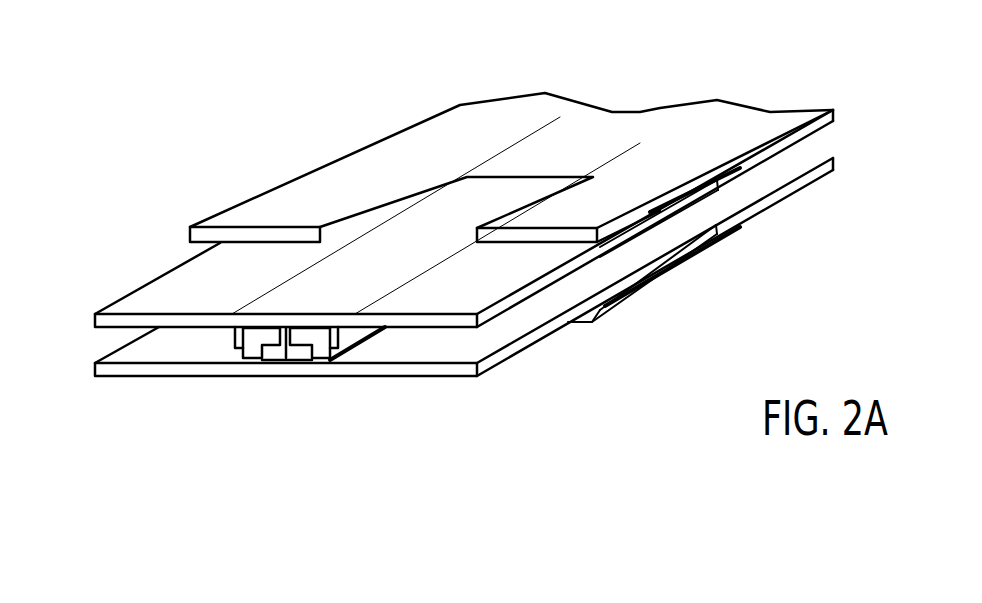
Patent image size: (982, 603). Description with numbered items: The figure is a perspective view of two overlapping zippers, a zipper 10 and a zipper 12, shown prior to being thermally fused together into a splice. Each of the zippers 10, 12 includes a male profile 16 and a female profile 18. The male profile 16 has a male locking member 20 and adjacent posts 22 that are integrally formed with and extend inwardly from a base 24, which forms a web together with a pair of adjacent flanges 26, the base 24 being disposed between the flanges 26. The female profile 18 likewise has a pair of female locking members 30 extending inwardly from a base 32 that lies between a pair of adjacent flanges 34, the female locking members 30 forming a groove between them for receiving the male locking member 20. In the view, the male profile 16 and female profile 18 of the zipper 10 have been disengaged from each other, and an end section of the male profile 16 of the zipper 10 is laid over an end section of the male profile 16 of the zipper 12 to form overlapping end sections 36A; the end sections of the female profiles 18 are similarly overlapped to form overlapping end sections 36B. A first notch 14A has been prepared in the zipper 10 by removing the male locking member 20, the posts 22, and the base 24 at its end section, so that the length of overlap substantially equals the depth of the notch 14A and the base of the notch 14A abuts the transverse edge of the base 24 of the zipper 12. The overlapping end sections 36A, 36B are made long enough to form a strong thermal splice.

The zipper 10 is at (612, 76).
The zipper 12 is at (123, 252).
The first notch 14A is at (511, 147).
The male profile 16 is at (836, 111).
The female profile 18 is at (814, 181).
The male locking member 20 is at (292, 358).
The posts 22 is at (247, 350).
The base 24 is at (665, 108).
The flanges 26 is at (518, 108).
The female locking members 30 is at (257, 360).
The base 32 is at (296, 365).
The flanges 34 is at (800, 163).
The overlapping end sections 36A is at (670, 195).
The overlapping end sections 36B is at (658, 267).